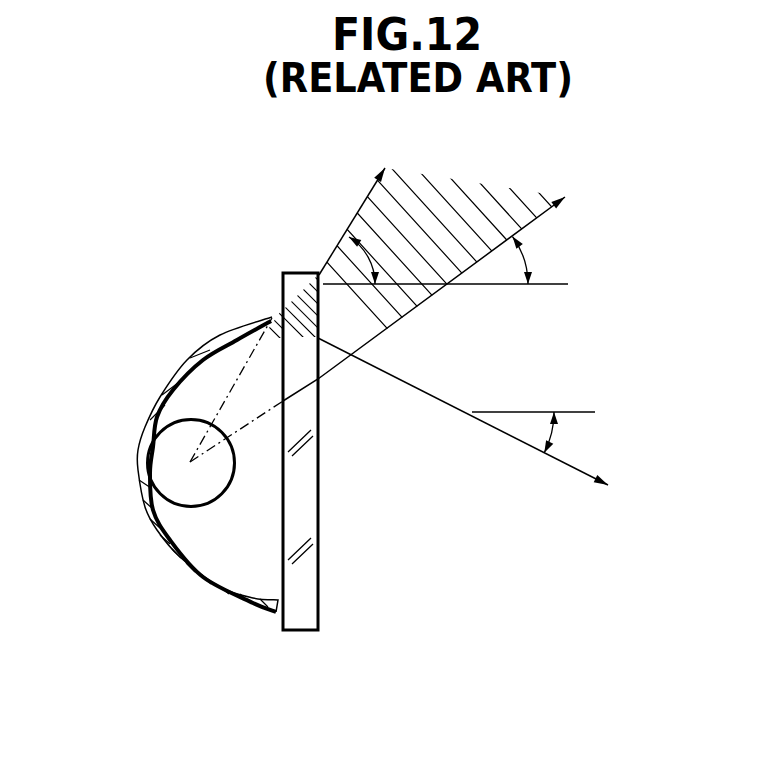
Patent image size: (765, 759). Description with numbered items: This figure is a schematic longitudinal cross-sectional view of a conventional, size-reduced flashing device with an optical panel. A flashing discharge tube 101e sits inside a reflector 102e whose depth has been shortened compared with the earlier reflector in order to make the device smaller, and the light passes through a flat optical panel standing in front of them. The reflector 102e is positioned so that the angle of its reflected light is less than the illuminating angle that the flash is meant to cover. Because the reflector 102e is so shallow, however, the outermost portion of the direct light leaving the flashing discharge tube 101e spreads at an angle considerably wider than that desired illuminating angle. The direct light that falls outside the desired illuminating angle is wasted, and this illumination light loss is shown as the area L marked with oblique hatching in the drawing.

The flashing discharge tube 101e is at (152, 460).
The reflector 102e is at (170, 541).
The area of illumination light loss L is at (412, 311).